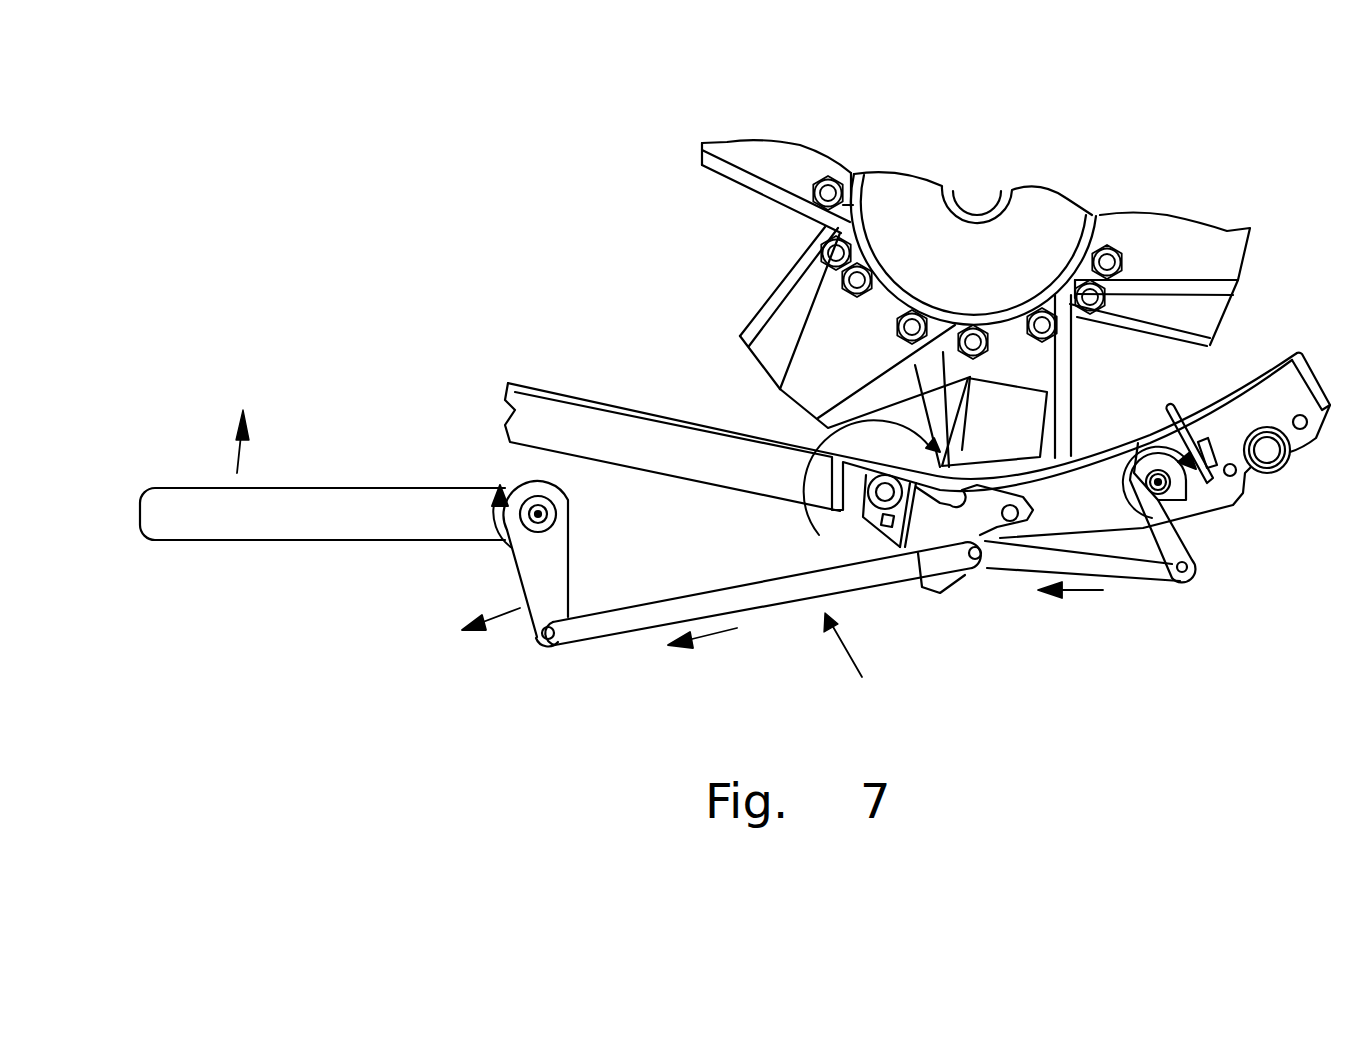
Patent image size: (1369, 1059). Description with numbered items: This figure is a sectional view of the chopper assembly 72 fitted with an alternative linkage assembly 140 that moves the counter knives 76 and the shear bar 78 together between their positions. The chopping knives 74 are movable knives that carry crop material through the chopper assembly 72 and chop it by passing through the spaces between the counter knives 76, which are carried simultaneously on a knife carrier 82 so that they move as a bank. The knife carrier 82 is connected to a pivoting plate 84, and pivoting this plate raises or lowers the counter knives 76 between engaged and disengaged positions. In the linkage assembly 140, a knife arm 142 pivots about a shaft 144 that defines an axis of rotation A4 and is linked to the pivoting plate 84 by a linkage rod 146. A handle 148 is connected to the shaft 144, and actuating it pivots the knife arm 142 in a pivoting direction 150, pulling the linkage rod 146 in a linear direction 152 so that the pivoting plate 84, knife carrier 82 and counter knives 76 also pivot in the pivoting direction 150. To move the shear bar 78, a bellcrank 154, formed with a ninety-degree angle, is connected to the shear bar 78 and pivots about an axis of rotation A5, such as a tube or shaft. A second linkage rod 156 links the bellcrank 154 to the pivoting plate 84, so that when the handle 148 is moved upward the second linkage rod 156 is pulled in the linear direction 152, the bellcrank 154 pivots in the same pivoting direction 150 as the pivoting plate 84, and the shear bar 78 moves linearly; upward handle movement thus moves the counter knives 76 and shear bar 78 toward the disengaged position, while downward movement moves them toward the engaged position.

The chopper assembly 72 is at (1228, 176).
The chopping knives 74 is at (947, 392).
The counter knives 76 is at (995, 402).
The shear bar 78 is at (1170, 412).
The knife carrier 82 is at (928, 540).
The pivoting plate 84 is at (973, 573).
The linkage assembly 140 is at (864, 660).
The knife arm 142 is at (575, 565).
The shaft 144 is at (540, 497).
The linkage rod 146 is at (753, 592).
The handle 148 is at (368, 497).
The pivoting direction 150 is at (828, 462).
The linear direction 152 is at (487, 632).
The bellcrank 154 is at (1177, 548).
The second linkage rod 156 is at (1140, 567).
The axis of rotation A4 is at (540, 514).
The axis of rotation A5 is at (1167, 487).